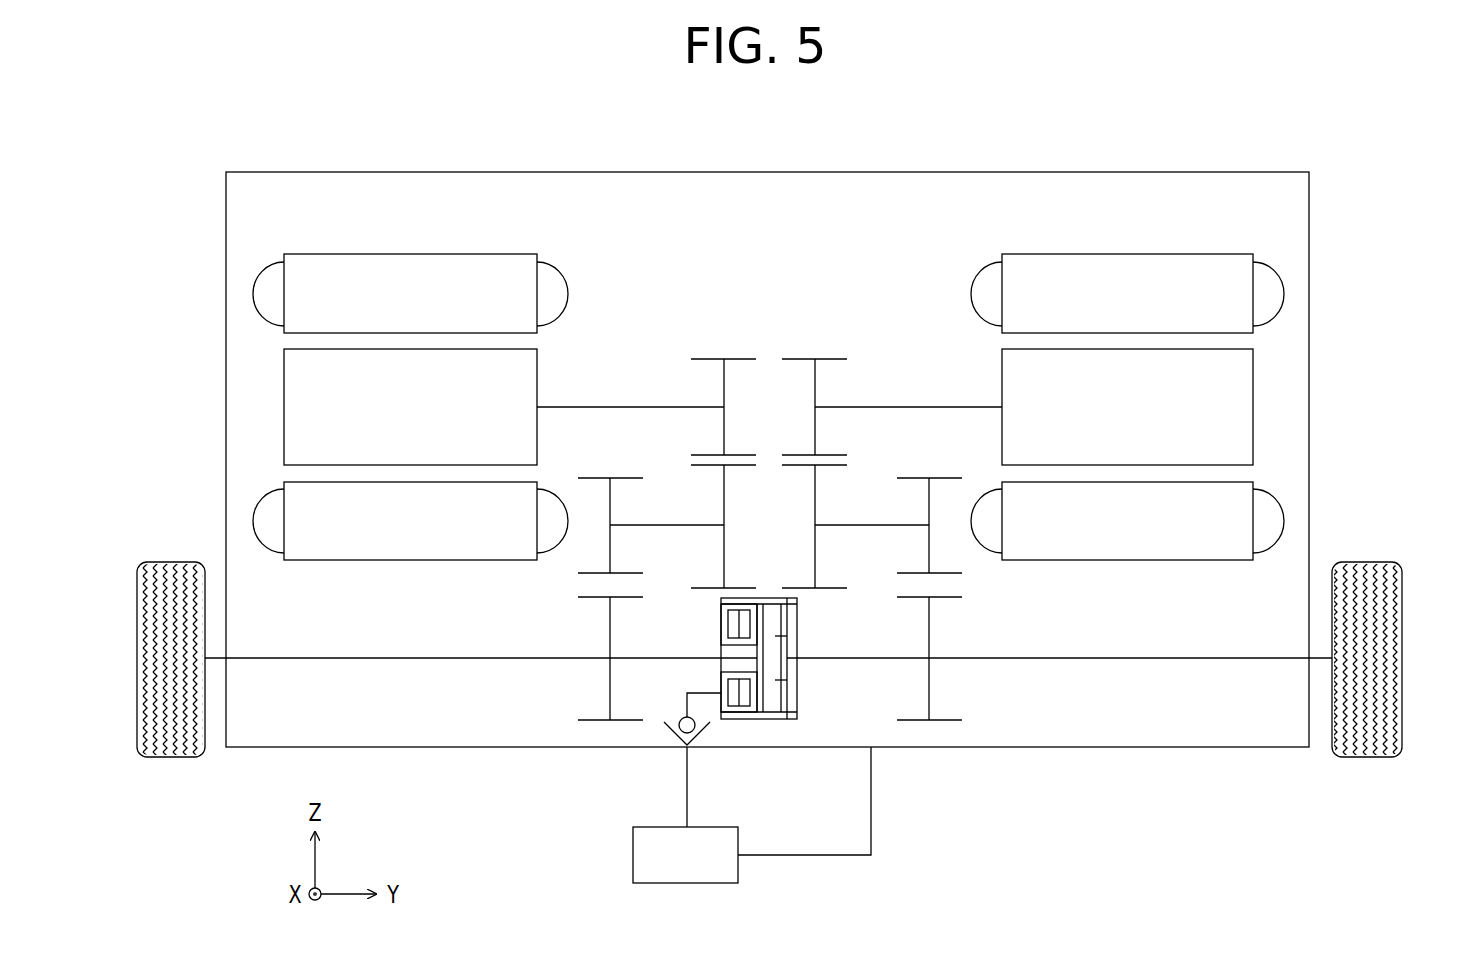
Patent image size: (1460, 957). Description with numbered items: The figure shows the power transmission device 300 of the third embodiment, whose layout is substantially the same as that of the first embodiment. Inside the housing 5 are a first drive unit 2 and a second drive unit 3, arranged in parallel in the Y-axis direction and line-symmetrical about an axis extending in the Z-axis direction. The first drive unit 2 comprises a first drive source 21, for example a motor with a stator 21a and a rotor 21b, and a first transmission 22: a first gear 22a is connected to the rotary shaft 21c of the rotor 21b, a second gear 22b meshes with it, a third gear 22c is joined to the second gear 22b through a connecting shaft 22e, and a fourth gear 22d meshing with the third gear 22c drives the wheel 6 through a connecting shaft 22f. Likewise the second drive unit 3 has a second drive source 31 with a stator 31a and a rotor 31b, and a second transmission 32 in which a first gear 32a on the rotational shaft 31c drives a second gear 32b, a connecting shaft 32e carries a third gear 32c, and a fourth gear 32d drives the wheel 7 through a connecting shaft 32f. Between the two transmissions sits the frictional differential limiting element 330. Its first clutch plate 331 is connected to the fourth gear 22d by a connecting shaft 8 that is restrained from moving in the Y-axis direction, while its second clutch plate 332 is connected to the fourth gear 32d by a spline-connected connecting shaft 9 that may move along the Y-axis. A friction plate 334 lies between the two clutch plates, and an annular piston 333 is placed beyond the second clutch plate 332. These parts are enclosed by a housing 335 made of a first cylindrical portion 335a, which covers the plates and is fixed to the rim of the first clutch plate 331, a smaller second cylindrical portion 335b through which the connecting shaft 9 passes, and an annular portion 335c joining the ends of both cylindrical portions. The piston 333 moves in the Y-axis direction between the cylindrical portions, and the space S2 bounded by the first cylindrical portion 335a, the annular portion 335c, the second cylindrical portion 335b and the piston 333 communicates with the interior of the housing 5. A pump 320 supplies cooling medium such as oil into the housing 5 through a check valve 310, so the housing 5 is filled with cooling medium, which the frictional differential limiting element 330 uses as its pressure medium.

The power transmission device 300 is at (1283, 51).
The housing 5 is at (800, 172).
The second drive unit 3 is at (429, 325).
The first drive unit 2 is at (1096, 325).
The second drive source 31 is at (351, 374).
The stator 31a is at (277, 273).
The rotor 31b is at (290, 398).
The rotational shaft 31c is at (580, 407).
The first drive source 21 is at (1174, 366).
The stator 21a is at (1235, 253).
The rotor 21b is at (1240, 418).
The rotary shaft 21c is at (963, 407).
The second transmission 32 is at (622, 475).
The first gear 32a is at (724, 380).
The second gear 32b is at (724, 495).
The third gear 32c is at (610, 553).
The fourth gear 32d is at (610, 630).
The connecting shaft 32e is at (663, 527).
The connecting shaft 32f is at (352, 658).
The first transmission 22 is at (915, 475).
The first gear 22a is at (815, 380).
The second gear 22b is at (815, 495).
The third gear 22c is at (929, 553).
The fourth gear 22d is at (929, 630).
The connecting shaft 22e is at (872, 527).
The connecting shaft 22f is at (1163, 658).
The connecting shaft 9 is at (627, 657).
The connecting shaft 8 is at (890, 657).
The wheel 7 is at (137, 632).
The wheel 6 is at (1402, 632).
The housing 335 is at (767, 697).
The first cylindrical portion 335a is at (772, 598).
The second cylindrical portion 335b is at (721, 685).
The annular portion 335c is at (672, 705).
The first clutch plate 331 is at (792, 625).
The piston 333 is at (735, 625).
The second clutch plate 332 is at (765, 723).
The frictional differential limiting element 330 is at (772, 723).
The friction plate 334 is at (783, 723).
The space S2 is at (737, 722).
The check valve 310 is at (667, 733).
The pump 320 is at (633, 855).